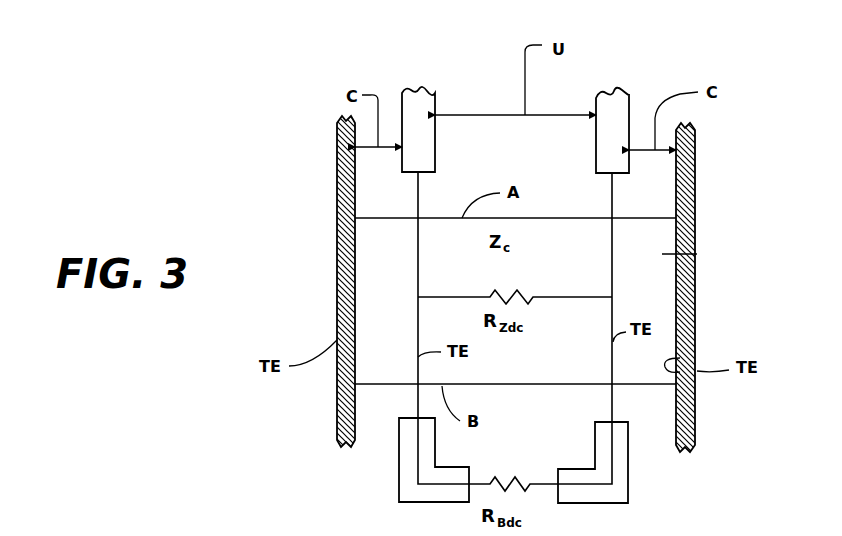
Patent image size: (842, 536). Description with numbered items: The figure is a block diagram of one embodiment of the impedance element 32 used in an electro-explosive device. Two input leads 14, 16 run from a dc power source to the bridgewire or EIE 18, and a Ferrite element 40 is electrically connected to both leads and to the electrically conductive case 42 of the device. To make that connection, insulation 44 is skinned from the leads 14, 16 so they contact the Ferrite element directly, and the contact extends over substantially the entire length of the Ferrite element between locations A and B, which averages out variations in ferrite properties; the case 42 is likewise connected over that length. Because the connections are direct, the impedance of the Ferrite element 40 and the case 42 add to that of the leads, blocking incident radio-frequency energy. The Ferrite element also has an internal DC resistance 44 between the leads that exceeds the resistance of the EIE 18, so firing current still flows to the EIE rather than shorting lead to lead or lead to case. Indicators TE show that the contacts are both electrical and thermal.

The input lead 14 is at (632, 91).
The input lead 16 is at (400, 86).
The bridgewire or EIE 18 is at (498, 481).
The impedance element 32 is at (314, 236).
The Ferrite element 40 is at (697, 254).
The electrically conductive case 42 is at (697, 180).
The insulation 44 is at (425, 106).